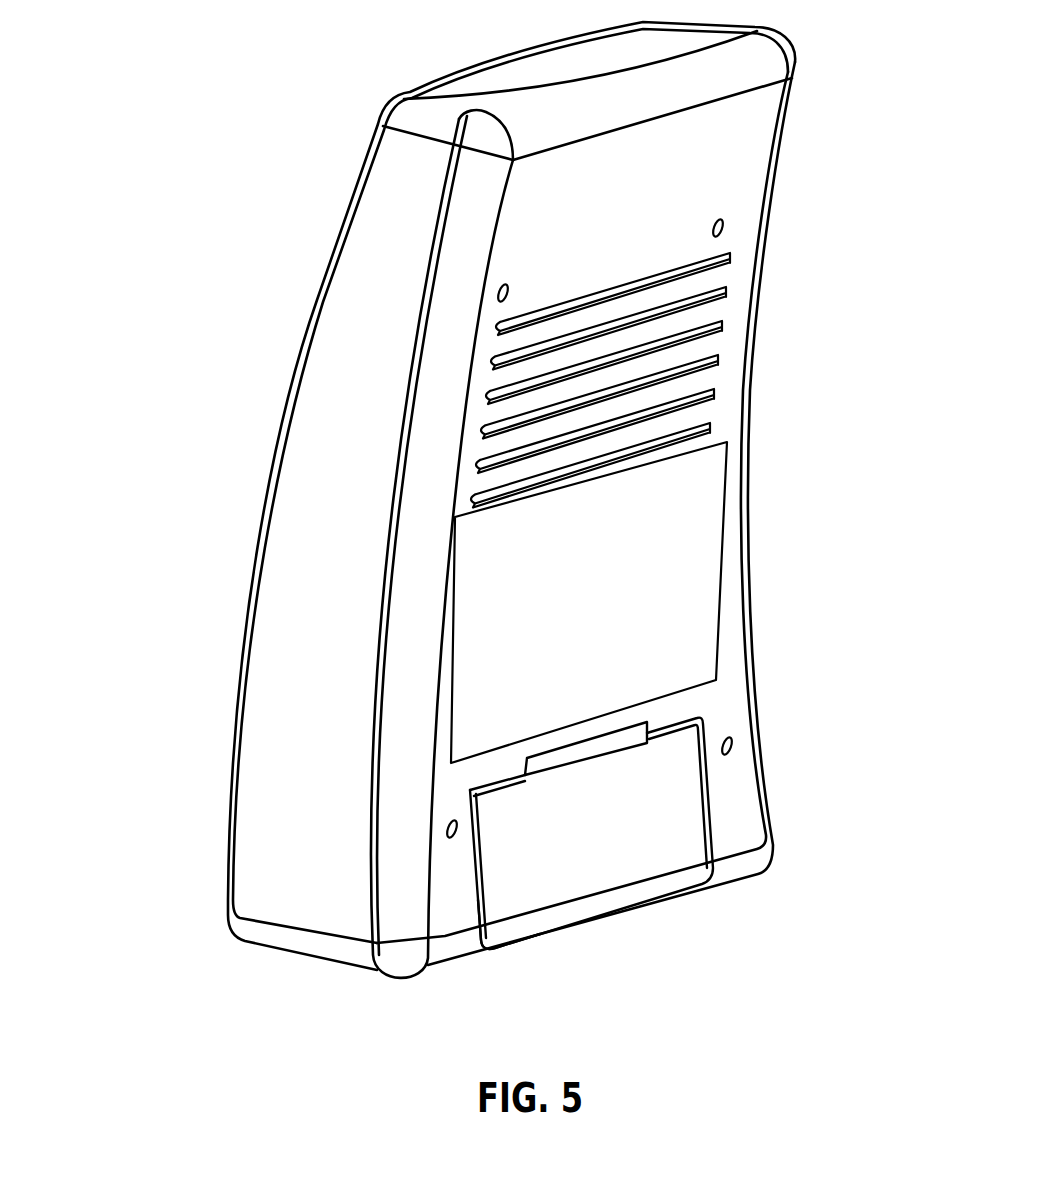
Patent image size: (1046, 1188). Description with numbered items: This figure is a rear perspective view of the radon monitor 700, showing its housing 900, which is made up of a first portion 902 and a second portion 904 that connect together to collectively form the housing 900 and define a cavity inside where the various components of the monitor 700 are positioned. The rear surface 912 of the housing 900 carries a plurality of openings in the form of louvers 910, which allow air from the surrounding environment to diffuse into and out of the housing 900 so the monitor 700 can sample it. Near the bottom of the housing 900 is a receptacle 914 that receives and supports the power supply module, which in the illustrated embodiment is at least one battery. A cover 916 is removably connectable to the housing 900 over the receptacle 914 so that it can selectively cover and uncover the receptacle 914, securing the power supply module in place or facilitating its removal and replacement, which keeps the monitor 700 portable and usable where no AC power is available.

The radon monitor 700 is at (140, 714).
The housing 900 is at (812, 93).
The first portion 902 is at (358, 248).
The second portion 904 is at (750, 153).
The louvers 910 is at (718, 327).
The rear surface 912 is at (623, 229).
The receptacle 914 is at (483, 899).
The cover 916 is at (628, 841).